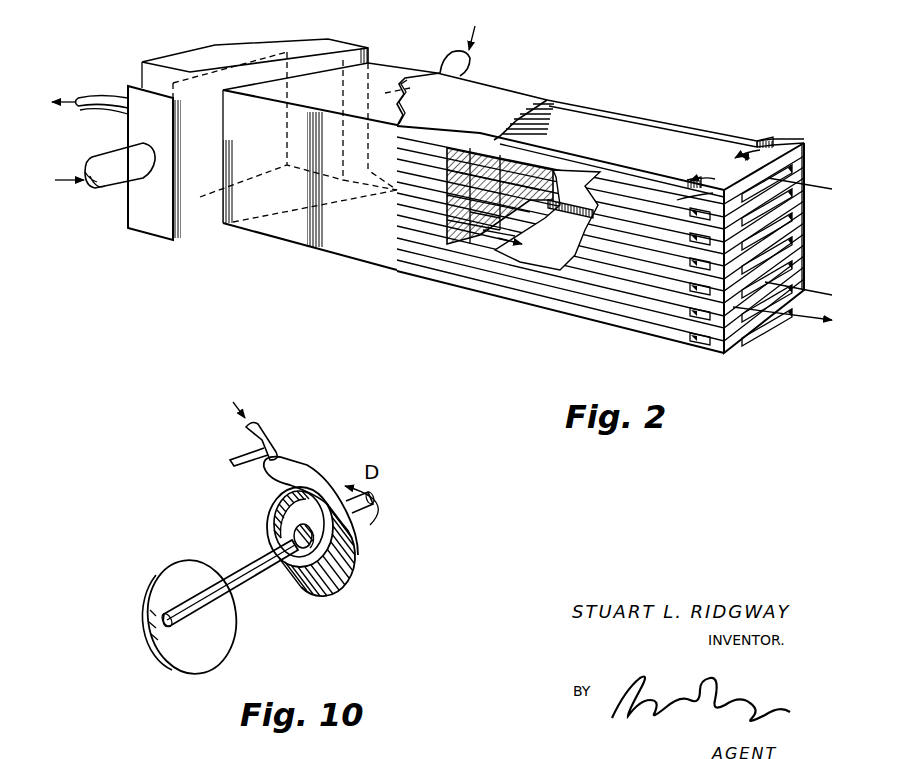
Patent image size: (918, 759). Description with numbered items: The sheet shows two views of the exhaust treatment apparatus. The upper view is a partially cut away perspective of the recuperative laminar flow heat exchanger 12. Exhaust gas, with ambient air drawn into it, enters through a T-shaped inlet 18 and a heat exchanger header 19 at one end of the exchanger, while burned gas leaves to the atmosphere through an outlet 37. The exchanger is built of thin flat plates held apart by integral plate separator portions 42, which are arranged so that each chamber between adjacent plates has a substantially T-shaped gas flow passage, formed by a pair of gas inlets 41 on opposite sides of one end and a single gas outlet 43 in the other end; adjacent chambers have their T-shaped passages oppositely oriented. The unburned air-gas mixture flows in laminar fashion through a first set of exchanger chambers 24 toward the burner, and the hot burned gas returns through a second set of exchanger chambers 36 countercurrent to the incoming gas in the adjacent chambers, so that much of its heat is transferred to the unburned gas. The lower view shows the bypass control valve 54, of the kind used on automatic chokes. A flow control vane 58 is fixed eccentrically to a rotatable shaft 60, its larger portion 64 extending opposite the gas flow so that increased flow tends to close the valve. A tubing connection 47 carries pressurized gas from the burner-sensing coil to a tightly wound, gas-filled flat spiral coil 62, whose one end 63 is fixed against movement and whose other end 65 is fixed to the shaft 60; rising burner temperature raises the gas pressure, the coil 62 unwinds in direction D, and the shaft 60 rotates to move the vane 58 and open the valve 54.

In FIG. 2, the heat exchanger 12 is at (598, 82).
In FIG. 2, the T-shaped inlet 18 is at (115, 182).
In FIG. 2, the heat exchanger header 19 is at (243, 48).
In FIG. 2, the first set of exchanger chambers 24 is at (485, 245).
In FIG. 2, the second set of exchanger chambers 36 is at (520, 208).
In FIG. 2, the outlet 37 is at (103, 97).
In FIG. 2, the gas inlets 41 is at (773, 142).
In FIG. 2, the plate separator portions 42 is at (628, 118).
In FIG. 2, the gas outlet 43 is at (667, 140).
In FIG. 10, the tubing connection 47 is at (258, 440).
In FIG. 10, the valve 54 is at (340, 448).
In FIG. 10, the flow control vane 58 is at (210, 572).
In FIG. 10, the shaft 60 is at (260, 580).
In FIG. 10, the spiral coil 62 is at (348, 590).
In FIG. 10, the one end 63 is at (238, 450).
In FIG. 10, the larger portion 64 is at (215, 640).
In FIG. 10, the other end 65 is at (345, 534).